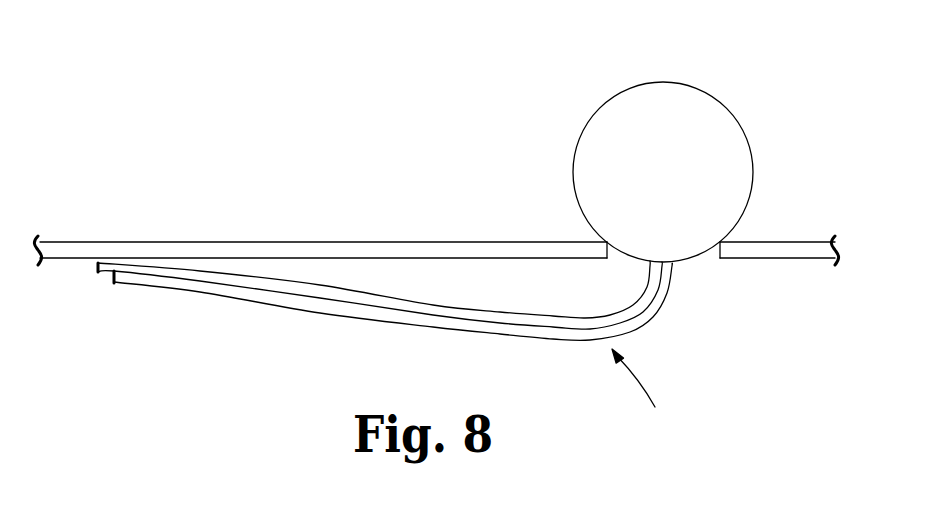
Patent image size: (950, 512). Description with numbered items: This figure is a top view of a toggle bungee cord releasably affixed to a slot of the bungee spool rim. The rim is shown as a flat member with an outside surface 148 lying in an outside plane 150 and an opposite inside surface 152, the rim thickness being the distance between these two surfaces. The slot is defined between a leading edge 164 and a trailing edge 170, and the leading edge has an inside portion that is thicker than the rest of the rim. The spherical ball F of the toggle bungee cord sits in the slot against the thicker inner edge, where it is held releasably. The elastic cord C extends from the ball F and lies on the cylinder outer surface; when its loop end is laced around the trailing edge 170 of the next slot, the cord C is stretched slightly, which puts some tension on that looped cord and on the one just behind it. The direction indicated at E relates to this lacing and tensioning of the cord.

The outside surface 148 is at (310, 246).
The outside plane 150 is at (310, 246).
The inside surface 152 is at (68, 258).
The leading edge 164 is at (603, 248).
The trailing edge 170 is at (723, 250).
The spherical ball F is at (700, 118).
The elastic cord C is at (257, 278).
The direction of movement E is at (643, 393).